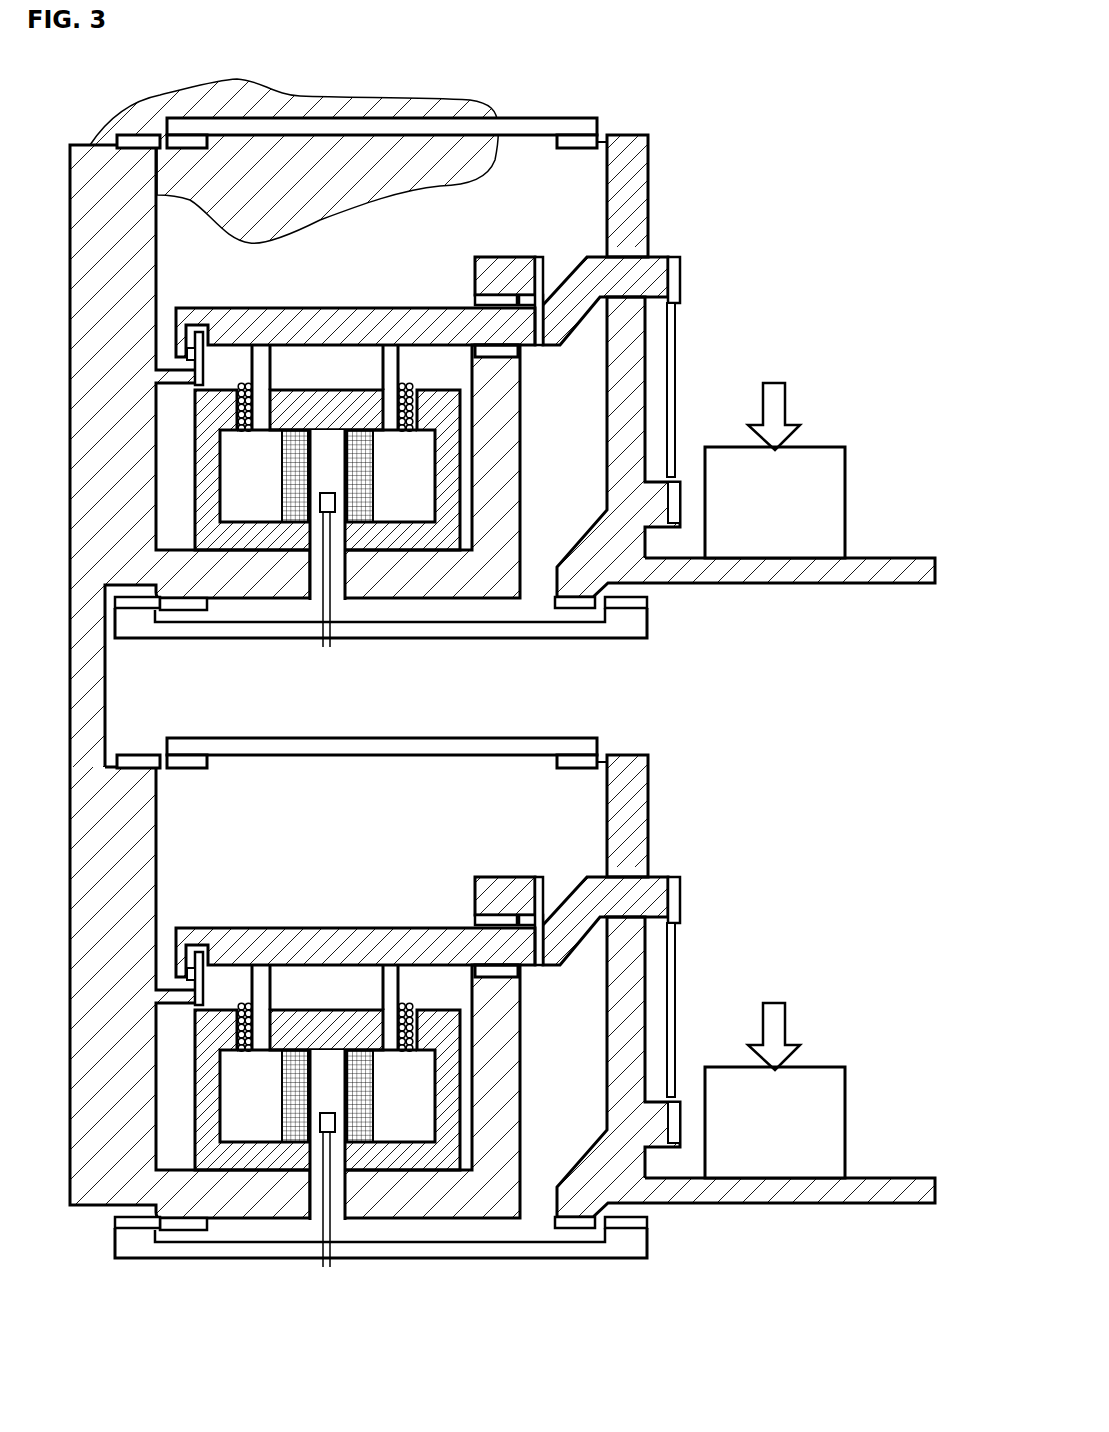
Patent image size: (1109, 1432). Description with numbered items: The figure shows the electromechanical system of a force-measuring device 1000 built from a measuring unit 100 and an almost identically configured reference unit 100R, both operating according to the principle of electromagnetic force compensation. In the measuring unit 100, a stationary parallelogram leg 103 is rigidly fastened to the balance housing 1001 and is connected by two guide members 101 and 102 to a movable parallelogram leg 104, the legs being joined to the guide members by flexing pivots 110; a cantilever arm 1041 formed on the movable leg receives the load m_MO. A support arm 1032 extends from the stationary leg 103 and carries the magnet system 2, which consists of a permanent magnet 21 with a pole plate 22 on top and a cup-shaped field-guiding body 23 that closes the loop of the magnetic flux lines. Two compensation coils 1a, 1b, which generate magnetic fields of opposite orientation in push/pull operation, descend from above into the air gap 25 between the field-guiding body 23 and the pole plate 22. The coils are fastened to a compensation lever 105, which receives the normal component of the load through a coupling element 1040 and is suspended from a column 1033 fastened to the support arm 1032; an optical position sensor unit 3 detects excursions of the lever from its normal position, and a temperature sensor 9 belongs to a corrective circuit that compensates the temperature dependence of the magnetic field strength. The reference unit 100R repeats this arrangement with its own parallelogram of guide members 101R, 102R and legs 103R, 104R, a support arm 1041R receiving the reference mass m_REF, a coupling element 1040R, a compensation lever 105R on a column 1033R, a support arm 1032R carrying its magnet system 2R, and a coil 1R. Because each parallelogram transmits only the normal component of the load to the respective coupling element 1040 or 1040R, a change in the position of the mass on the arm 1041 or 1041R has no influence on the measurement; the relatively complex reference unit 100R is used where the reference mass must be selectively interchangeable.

The force-measuring device 1000 is at (815, 134).
The measuring unit 100 is at (682, 151).
The reference unit 100R is at (510, 1009).
The balance housing 1001 is at (400, 105).
The guide member 101 is at (528, 128).
The guide member of reference unit 101R is at (362, 735).
The guide member 102 is at (412, 625).
The guide member of reference unit 102R is at (381, 1257).
The stationary parallelogram leg 103 is at (130, 258).
The stationary parallelogram leg of reference unit 103R is at (190, 992).
The movable parallelogram leg 104 is at (636, 208).
The movable parallelogram leg of reference unit 104R is at (648, 986).
The compensation lever 105 is at (337, 313).
The compensation lever of reference unit 105R is at (355, 919).
The support arm 1032 is at (452, 578).
The support arm of reference unit 1032R is at (450, 1130).
The column 1033 is at (496, 257).
The column of reference unit 1033R is at (526, 899).
The coupling element 1040 is at (675, 320).
The coupling element of reference unit 1040R is at (667, 987).
The cantilever arm 1041 is at (870, 558).
The support arm of reference unit 1041R is at (797, 1171).
The flexing pivot 110 is at (378, 1257).
The magnet system 2 is at (377, 820).
The magnet system of reference unit 2R is at (306, 1159).
The permanent magnet 21 is at (310, 820).
The pole plate 22 is at (330, 408).
The cup-shaped field-guiding body 23 is at (451, 490).
The air gap 25 is at (238, 432).
The compensation coil 1a is at (404, 432).
The compensation coil 1b is at (406, 400).
The compensation coil of reference unit 1R is at (415, 1046).
The optical position sensor unit 3 is at (193, 330).
The temperature sensor 9 is at (327, 493).